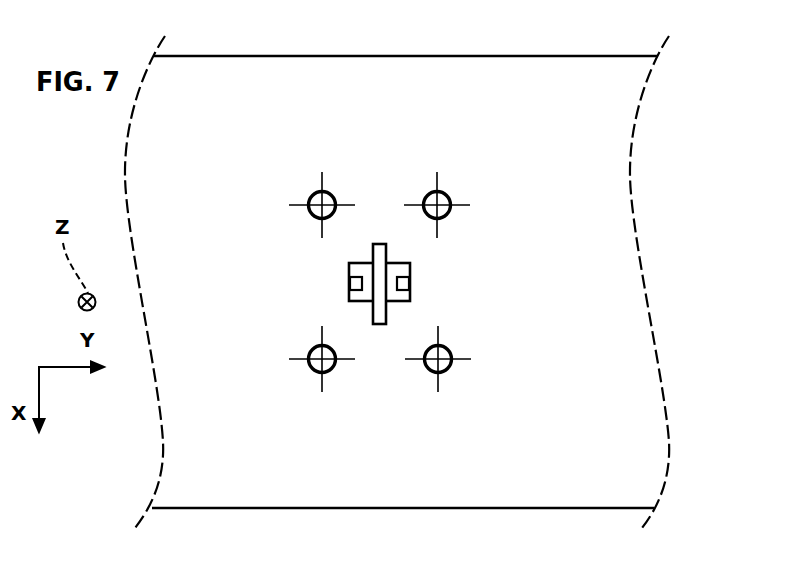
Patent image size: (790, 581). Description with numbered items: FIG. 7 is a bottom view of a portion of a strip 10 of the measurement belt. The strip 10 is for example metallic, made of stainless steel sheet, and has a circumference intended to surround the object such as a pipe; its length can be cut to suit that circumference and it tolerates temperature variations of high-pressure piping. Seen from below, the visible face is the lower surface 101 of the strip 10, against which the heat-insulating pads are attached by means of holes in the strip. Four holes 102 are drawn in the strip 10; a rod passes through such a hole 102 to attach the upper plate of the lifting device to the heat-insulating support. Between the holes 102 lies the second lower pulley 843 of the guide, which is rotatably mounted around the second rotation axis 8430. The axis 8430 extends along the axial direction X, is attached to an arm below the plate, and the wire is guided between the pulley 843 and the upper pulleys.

The strip 10 is at (537, 93).
The lower surface 101 is at (388, 427).
The hole 102 is at (303, 189).
The second lower pulley 843 is at (386, 293).
The second rotation axis 8430 is at (369, 251).